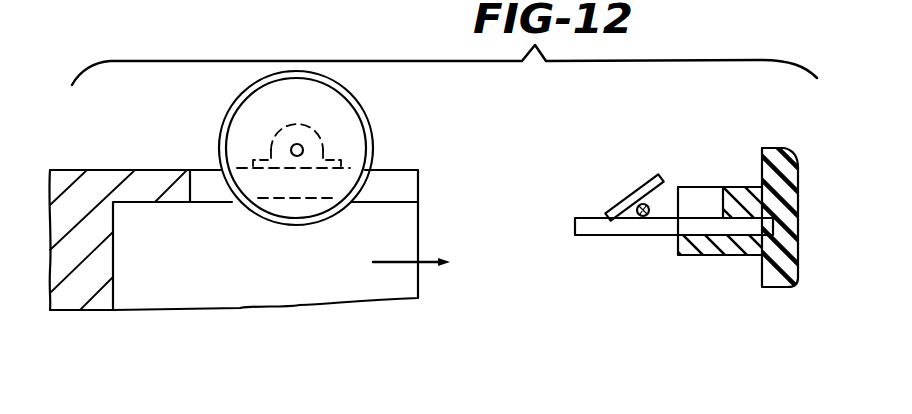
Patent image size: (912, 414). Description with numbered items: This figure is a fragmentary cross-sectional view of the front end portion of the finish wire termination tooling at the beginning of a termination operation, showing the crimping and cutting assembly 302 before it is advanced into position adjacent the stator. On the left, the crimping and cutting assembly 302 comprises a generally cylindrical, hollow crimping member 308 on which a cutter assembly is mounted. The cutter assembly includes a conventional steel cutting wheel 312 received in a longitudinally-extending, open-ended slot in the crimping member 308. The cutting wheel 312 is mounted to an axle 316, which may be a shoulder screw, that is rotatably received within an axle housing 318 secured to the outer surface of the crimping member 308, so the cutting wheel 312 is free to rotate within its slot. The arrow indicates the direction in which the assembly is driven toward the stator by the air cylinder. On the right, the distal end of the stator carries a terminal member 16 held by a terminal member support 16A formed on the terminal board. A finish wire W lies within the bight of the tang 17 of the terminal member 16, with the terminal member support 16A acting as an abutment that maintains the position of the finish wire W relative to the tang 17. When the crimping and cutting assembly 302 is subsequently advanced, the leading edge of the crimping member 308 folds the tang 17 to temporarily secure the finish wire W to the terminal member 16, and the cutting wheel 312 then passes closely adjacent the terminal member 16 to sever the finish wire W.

The crimping and cutting assembly 302 is at (178, 317).
The crimping member 308 is at (92, 187).
The cutting wheel 312 is at (343, 118).
The axle housing 318 is at (278, 137).
The axle 316 is at (297, 156).
The tang 17 is at (638, 188).
The finish wire W is at (642, 223).
The terminal member 16 is at (693, 267).
The terminal member support 16A is at (778, 170).